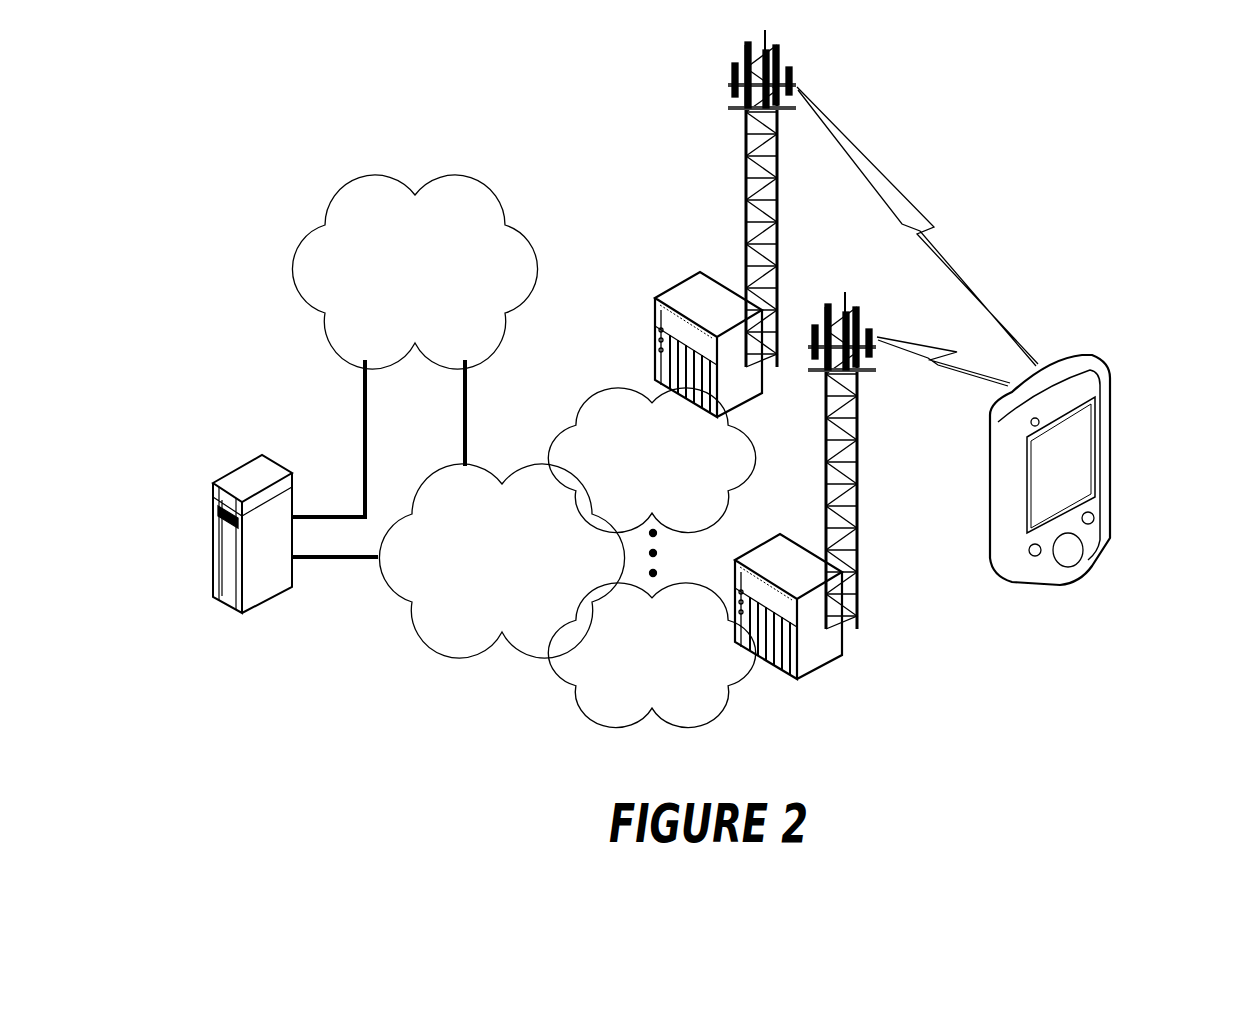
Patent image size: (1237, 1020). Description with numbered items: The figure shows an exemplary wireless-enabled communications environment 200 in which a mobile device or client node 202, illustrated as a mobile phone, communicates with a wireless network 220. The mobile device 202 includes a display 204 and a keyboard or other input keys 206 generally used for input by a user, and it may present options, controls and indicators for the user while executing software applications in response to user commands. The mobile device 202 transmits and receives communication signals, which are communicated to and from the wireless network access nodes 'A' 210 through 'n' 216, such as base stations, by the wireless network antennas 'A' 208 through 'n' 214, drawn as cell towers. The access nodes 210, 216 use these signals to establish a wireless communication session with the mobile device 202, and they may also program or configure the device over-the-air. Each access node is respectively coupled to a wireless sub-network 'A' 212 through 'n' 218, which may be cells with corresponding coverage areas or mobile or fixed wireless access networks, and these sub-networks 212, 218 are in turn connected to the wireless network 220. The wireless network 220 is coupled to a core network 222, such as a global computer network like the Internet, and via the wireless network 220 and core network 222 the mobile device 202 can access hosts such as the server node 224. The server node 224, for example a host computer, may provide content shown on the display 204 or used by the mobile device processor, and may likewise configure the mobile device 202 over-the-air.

The wireless network environment 200 is at (418, 99).
The mobile device 202 is at (1095, 510).
The display 204 is at (1080, 443).
The input keys 206 is at (1113, 450).
The wireless network antenna 'A' 208 is at (858, 573).
The wireless network access node 'A' 210 is at (798, 676).
The wireless sub-network 'A' 212 is at (651, 655).
The wireless network antenna 'n' 214 is at (745, 164).
The wireless network access node 'n' 216 is at (692, 276).
The wireless sub-network 'n' 218 is at (651, 460).
The wireless network 220 is at (501, 561).
The core network 222 is at (414, 272).
The server node 224 is at (255, 604).